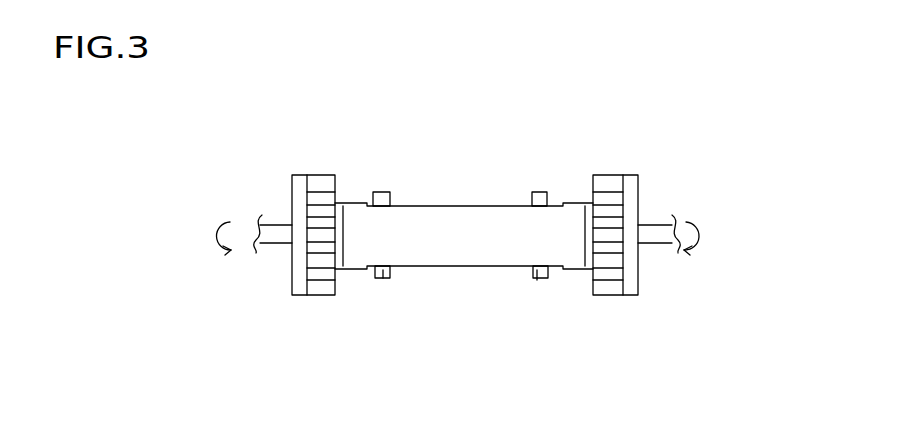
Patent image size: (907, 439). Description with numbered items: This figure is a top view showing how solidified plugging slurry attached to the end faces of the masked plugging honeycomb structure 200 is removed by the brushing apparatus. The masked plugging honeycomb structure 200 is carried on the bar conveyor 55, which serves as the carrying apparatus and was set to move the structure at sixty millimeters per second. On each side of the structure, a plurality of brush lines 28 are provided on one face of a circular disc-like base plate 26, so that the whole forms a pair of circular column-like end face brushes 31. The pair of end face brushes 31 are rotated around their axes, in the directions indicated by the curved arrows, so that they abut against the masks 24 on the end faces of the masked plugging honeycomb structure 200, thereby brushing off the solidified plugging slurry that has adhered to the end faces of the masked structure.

The masked plugging honeycomb structure 200 is at (464, 184).
The mask 24 is at (343, 237).
The bar conveyor 55 is at (537, 280).
The base plate 26 is at (300, 188).
The brush lines 28 is at (325, 273).
The end face brush 31 is at (258, 277).